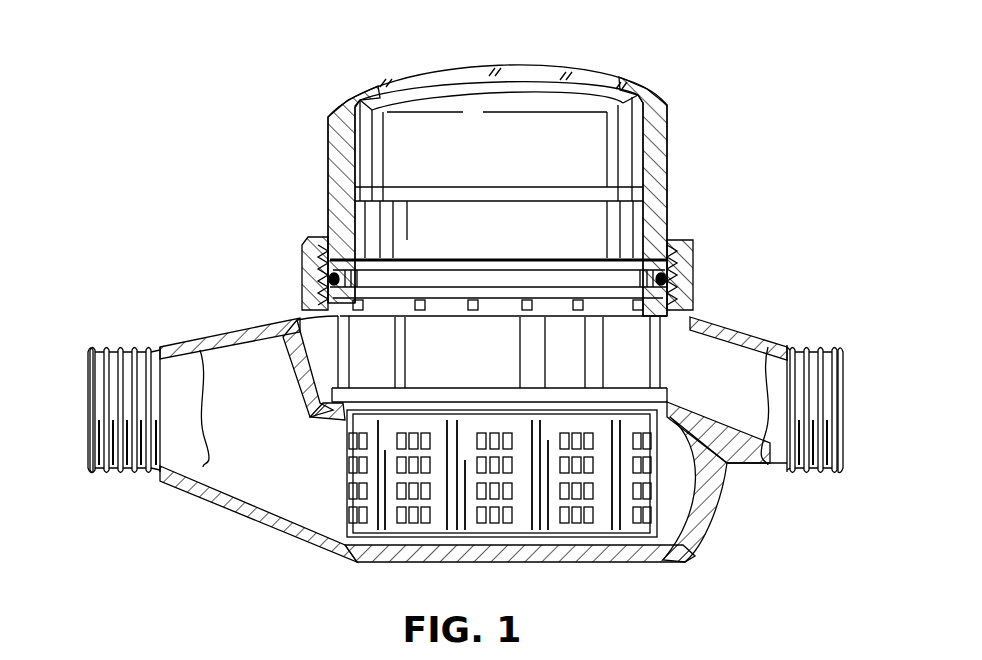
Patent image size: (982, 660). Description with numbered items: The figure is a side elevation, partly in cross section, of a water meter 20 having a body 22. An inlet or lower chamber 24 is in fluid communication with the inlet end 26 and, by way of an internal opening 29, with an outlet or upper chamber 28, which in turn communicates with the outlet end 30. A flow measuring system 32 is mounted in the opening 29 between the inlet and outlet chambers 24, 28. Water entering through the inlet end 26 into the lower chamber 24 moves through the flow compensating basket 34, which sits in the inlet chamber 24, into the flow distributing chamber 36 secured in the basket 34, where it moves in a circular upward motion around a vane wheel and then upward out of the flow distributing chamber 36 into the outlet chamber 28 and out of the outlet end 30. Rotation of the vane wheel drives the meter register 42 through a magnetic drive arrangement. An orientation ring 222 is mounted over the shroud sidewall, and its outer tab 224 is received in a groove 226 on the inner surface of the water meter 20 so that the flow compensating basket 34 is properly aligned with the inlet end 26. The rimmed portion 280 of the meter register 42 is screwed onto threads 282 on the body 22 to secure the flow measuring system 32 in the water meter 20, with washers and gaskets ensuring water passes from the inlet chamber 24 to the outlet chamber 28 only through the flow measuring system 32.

The water meter 20 is at (729, 102).
The body 22 is at (256, 518).
The inlet or lower chamber 24 is at (215, 470).
The inlet end 26 is at (128, 470).
The outlet or upper chamber 28 is at (314, 350).
The internal opening 29 is at (343, 420).
The outlet end 30 is at (785, 475).
The flow measuring system 32 is at (342, 494).
The flow compensating basket 34 is at (658, 507).
The flow distributing chamber 36 is at (672, 372).
The meter register 42 is at (634, 163).
The orientation ring 222 is at (600, 251).
The outer tab 224 is at (300, 245).
The groove 226 is at (326, 240).
The rimmed portion 280 is at (667, 104).
The threads 282 is at (663, 279).